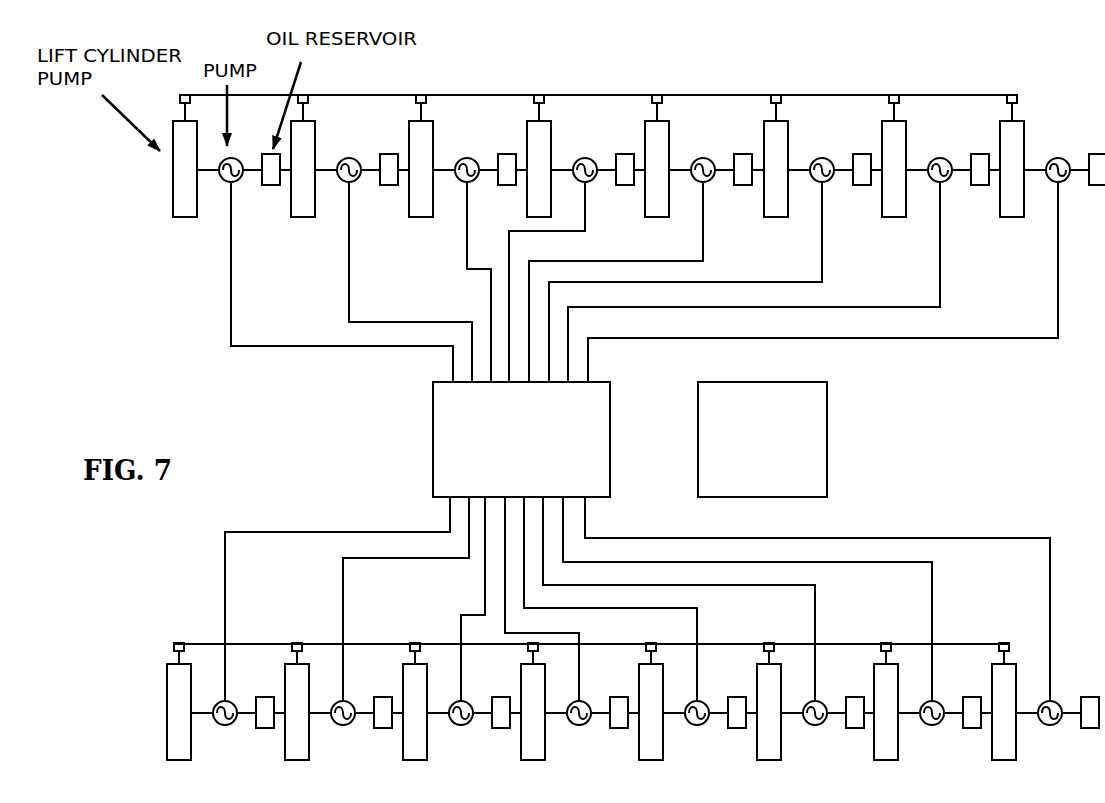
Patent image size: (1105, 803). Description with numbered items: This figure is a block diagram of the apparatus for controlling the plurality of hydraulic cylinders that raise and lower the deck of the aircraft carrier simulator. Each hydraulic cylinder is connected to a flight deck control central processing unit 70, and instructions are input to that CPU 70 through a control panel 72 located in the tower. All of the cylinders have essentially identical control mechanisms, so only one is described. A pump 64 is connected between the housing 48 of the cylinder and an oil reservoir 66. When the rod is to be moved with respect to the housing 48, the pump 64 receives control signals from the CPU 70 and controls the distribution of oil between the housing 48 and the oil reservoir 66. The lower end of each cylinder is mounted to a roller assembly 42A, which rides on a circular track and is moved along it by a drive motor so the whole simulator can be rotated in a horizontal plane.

The roller assembly 42A is at (120, 280).
The housing 48 is at (173, 162).
The pump 64 is at (226, 180).
The oil reservoir 66 is at (272, 186).
The flight deck control central processing unit 70 is at (432, 420).
The control panel 72 is at (827, 432).